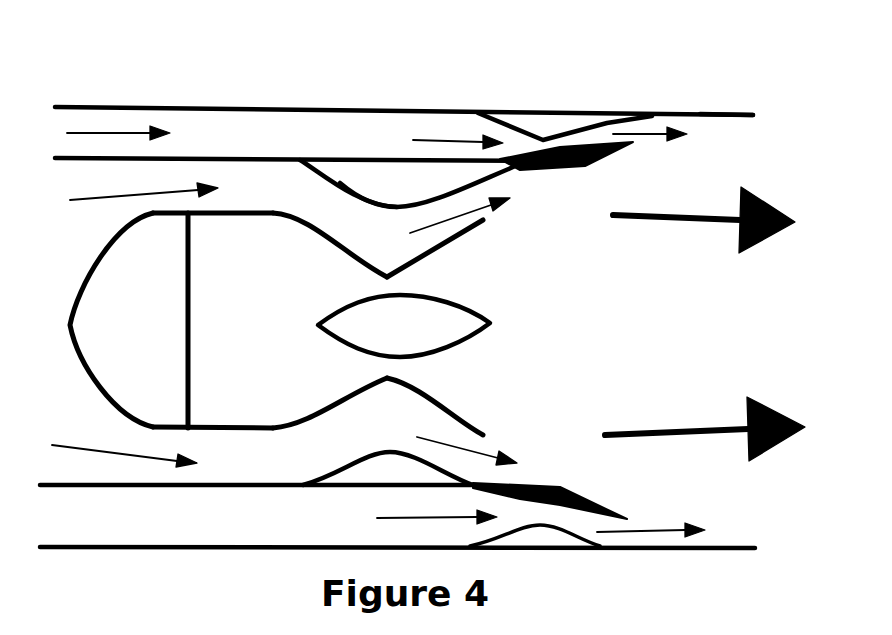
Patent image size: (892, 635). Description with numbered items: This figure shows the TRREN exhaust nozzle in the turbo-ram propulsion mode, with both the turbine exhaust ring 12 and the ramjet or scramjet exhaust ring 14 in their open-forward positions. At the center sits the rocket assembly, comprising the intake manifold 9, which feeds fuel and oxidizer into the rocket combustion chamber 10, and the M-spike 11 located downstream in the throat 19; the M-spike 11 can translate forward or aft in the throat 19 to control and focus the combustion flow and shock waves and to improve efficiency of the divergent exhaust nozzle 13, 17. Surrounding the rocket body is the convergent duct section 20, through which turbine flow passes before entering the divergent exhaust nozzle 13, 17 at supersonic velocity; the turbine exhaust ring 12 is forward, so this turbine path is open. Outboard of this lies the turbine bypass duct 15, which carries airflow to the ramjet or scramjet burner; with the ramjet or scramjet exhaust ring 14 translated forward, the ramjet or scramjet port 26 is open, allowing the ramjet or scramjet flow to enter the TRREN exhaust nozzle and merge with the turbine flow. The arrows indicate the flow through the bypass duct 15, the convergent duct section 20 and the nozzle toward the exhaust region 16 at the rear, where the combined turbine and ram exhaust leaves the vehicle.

The intake manifold 9 is at (129, 320).
The rocket combustion chamber 10 is at (270, 320).
The M-spike 11 is at (404, 326).
The turbine exhaust ring 12 is at (392, 178).
The divergent exhaust nozzle 13 is at (580, 152).
The ramjet or scramjet exhaust ring 14 is at (541, 122).
The turbine bypass duct 15 is at (397, 327).
The outlet region 16 is at (705, 324).
The divergent exhaust nozzle 17 is at (713, 117).
The throat 19 is at (387, 283).
The convergent duct section 20 is at (291, 322).
The ramjet or scramjet port 26 is at (533, 508).